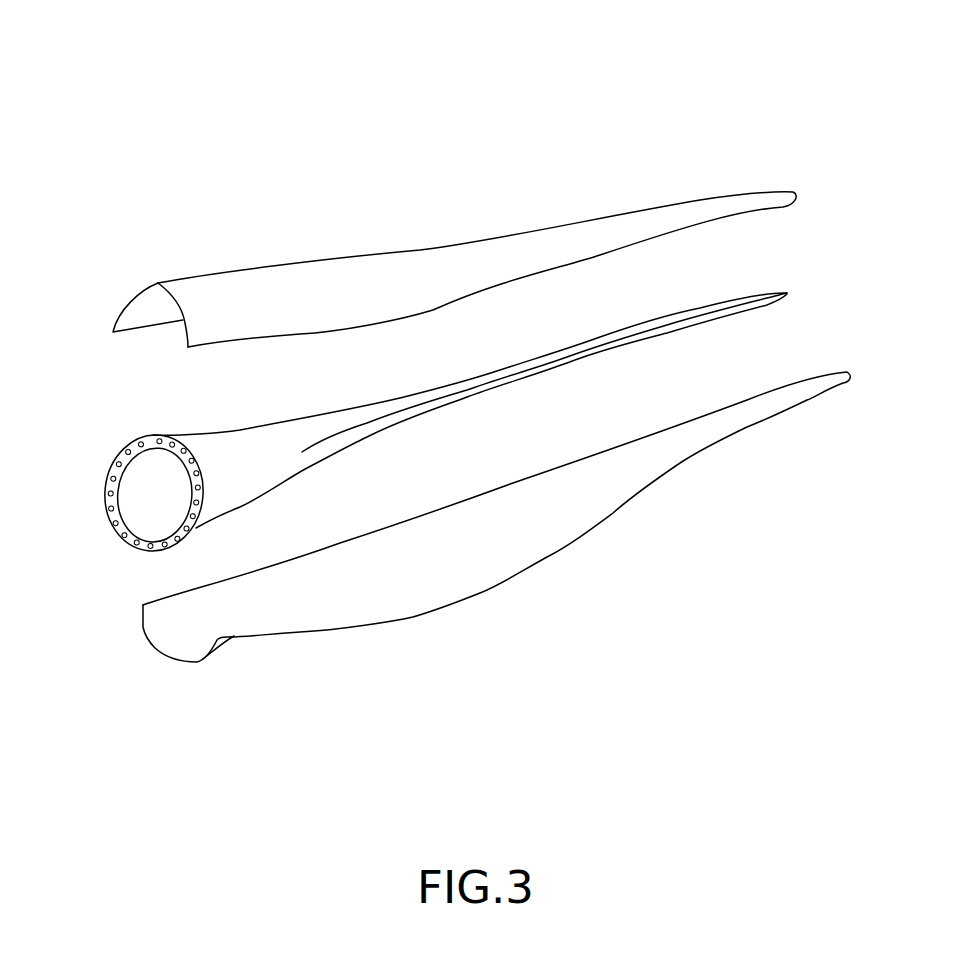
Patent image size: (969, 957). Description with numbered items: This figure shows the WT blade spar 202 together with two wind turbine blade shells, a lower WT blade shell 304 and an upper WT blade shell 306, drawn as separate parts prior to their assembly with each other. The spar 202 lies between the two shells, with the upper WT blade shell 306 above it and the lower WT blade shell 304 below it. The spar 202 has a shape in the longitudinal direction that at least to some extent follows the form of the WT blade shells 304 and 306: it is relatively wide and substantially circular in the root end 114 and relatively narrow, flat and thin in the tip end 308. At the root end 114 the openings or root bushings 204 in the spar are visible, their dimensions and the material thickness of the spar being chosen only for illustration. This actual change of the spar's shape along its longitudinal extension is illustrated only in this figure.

The root end 114 is at (123, 686).
The WT blade spar 202 is at (197, 435).
The root bushings 204 is at (112, 517).
The lower WT blade shell 304 is at (232, 638).
The upper WT blade shell 306 is at (307, 267).
The tip end 308 is at (831, 151).